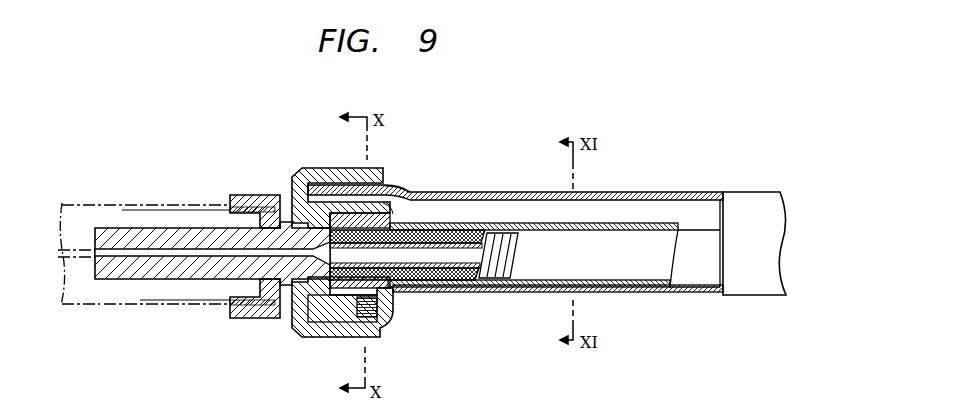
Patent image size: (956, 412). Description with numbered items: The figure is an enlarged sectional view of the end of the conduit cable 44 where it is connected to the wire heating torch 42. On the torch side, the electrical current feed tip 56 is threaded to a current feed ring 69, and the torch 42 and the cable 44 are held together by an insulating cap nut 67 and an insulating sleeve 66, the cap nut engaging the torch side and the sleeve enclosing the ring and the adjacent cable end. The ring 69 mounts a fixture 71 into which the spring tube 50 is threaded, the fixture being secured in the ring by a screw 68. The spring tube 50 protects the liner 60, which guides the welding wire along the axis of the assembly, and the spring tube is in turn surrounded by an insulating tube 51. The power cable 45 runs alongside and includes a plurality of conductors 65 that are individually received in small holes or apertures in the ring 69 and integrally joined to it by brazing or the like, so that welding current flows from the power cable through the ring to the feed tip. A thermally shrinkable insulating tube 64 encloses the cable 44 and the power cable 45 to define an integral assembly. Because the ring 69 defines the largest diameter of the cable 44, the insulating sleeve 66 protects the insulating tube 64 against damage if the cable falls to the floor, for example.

The wire heating torch 42 is at (100, 293).
The cable 44 is at (747, 276).
The power cable 45 is at (627, 206).
The spring tube 50 is at (509, 260).
The insulating tube 51 is at (697, 270).
The electrical current feed tip 56 is at (127, 236).
The liner 60 is at (450, 256).
The thermally shrinkable insulating tube 64 is at (628, 294).
The conductors 65 is at (410, 193).
The insulating sleeve 66 is at (316, 176).
The insulating cap nut 67 is at (234, 196).
The screw 68 is at (388, 322).
The current feed ring 69 is at (323, 311).
The fixture 71 is at (382, 204).